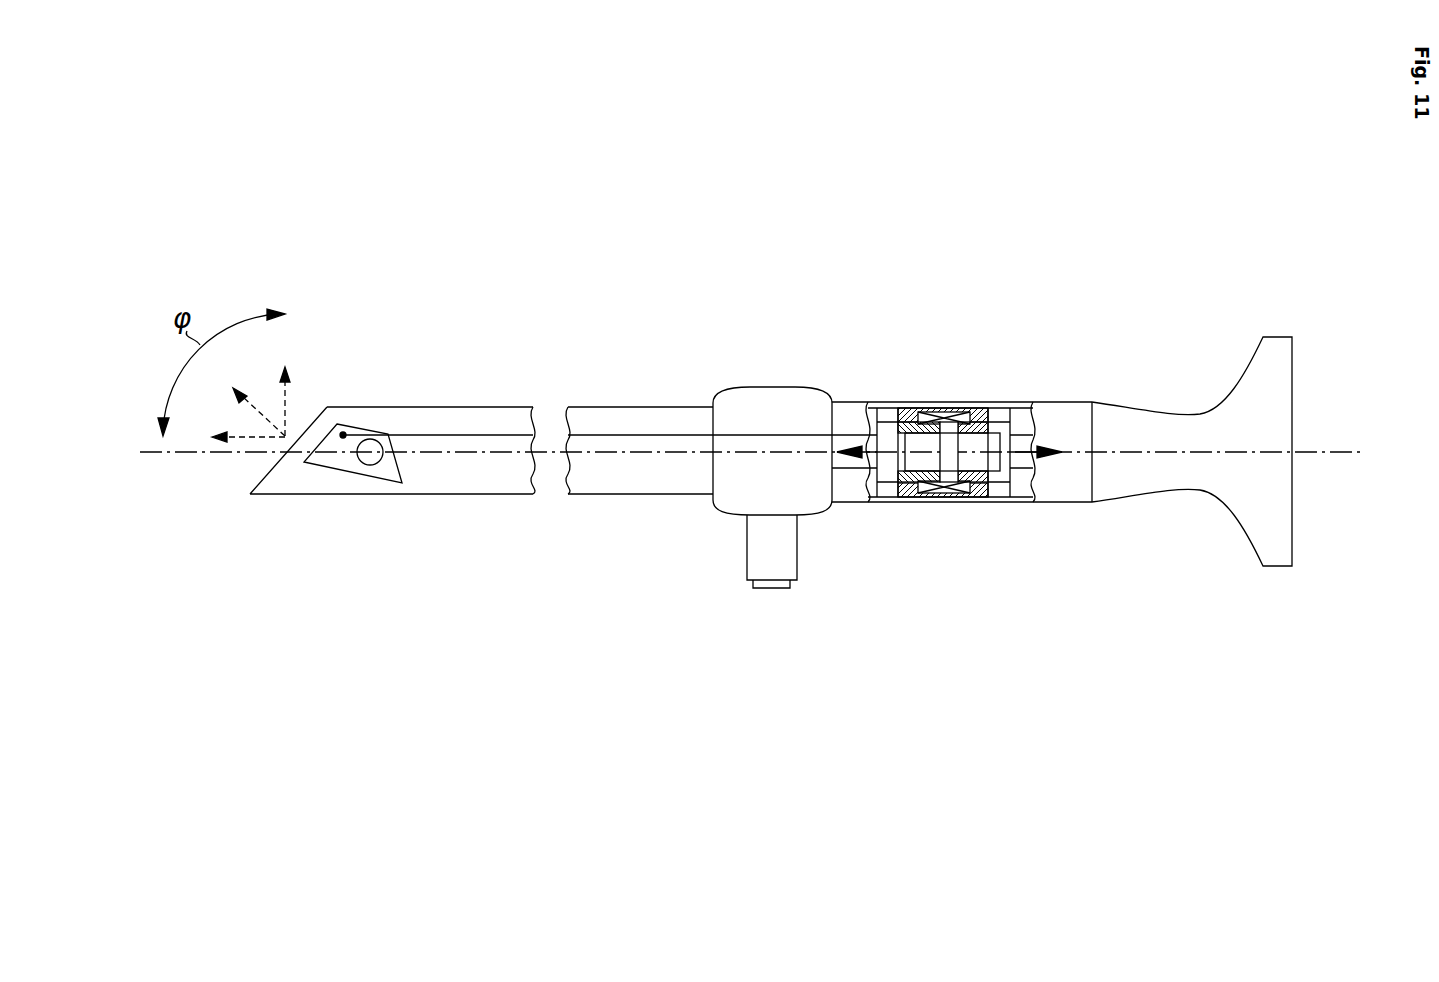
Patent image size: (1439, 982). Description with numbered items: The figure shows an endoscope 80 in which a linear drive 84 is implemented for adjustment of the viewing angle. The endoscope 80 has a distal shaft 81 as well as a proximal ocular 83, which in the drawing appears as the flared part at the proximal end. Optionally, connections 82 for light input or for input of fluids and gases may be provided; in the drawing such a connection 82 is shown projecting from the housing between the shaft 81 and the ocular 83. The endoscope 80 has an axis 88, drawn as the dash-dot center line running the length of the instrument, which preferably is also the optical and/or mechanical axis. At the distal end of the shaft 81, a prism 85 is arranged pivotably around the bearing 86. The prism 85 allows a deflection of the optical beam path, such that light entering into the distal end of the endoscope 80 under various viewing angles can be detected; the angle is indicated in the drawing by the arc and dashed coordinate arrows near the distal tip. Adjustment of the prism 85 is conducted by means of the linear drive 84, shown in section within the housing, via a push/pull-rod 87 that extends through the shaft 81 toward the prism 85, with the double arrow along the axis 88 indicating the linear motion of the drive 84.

The endoscope 80 is at (987, 365).
The distal shaft 81 is at (478, 407).
The connections 82 is at (783, 552).
The proximal ocular 83 is at (1212, 412).
The linear drive 84 is at (970, 500).
The prism 85 is at (311, 464).
The bearing 86 is at (370, 466).
The push/pull-rod 87 is at (423, 435).
The axis 88 is at (1343, 452).